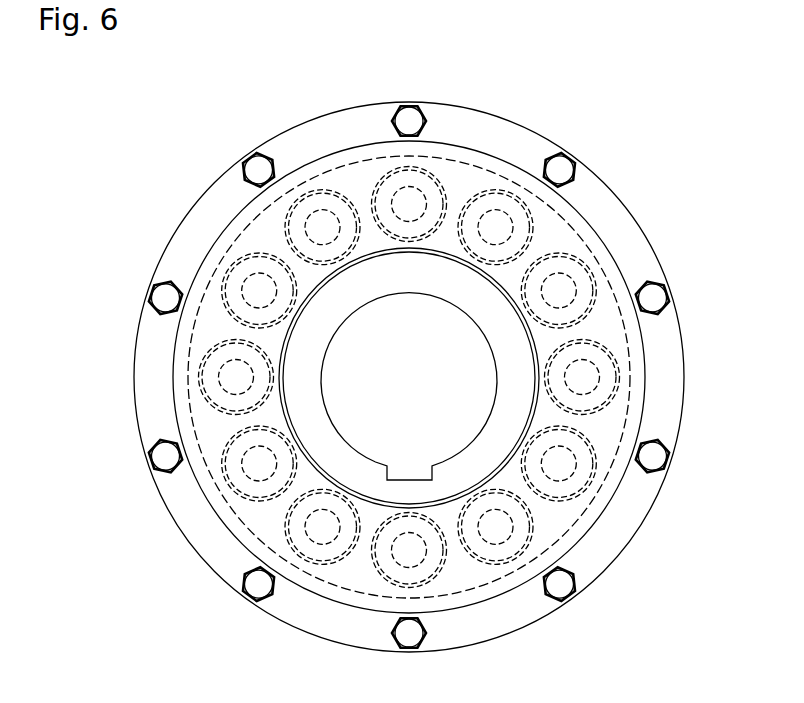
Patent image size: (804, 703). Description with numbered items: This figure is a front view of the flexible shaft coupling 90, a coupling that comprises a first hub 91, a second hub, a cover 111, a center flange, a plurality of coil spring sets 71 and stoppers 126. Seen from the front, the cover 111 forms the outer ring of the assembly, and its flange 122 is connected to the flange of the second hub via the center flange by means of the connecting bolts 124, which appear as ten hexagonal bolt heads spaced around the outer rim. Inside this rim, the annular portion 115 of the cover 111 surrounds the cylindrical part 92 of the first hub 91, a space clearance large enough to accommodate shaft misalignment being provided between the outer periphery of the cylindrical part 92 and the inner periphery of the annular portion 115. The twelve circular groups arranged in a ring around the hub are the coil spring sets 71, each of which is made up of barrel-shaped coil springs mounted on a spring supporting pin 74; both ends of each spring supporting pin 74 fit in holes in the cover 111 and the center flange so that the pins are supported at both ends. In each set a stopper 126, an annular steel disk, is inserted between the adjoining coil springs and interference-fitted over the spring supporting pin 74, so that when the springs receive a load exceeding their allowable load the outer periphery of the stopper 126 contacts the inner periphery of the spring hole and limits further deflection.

The flexible shaft coupling 90 is at (179, 78).
The cover 111 is at (543, 132).
The flange 122 is at (642, 253).
The annular portion 115 is at (588, 227).
The connecting bolts 124 is at (655, 300).
The stopper 126 is at (313, 205).
The coil spring sets 71 is at (377, 180).
The spring supporting pins 74 is at (409, 200).
The first hub 91 is at (521, 360).
The cylindrical part 92 is at (522, 399).